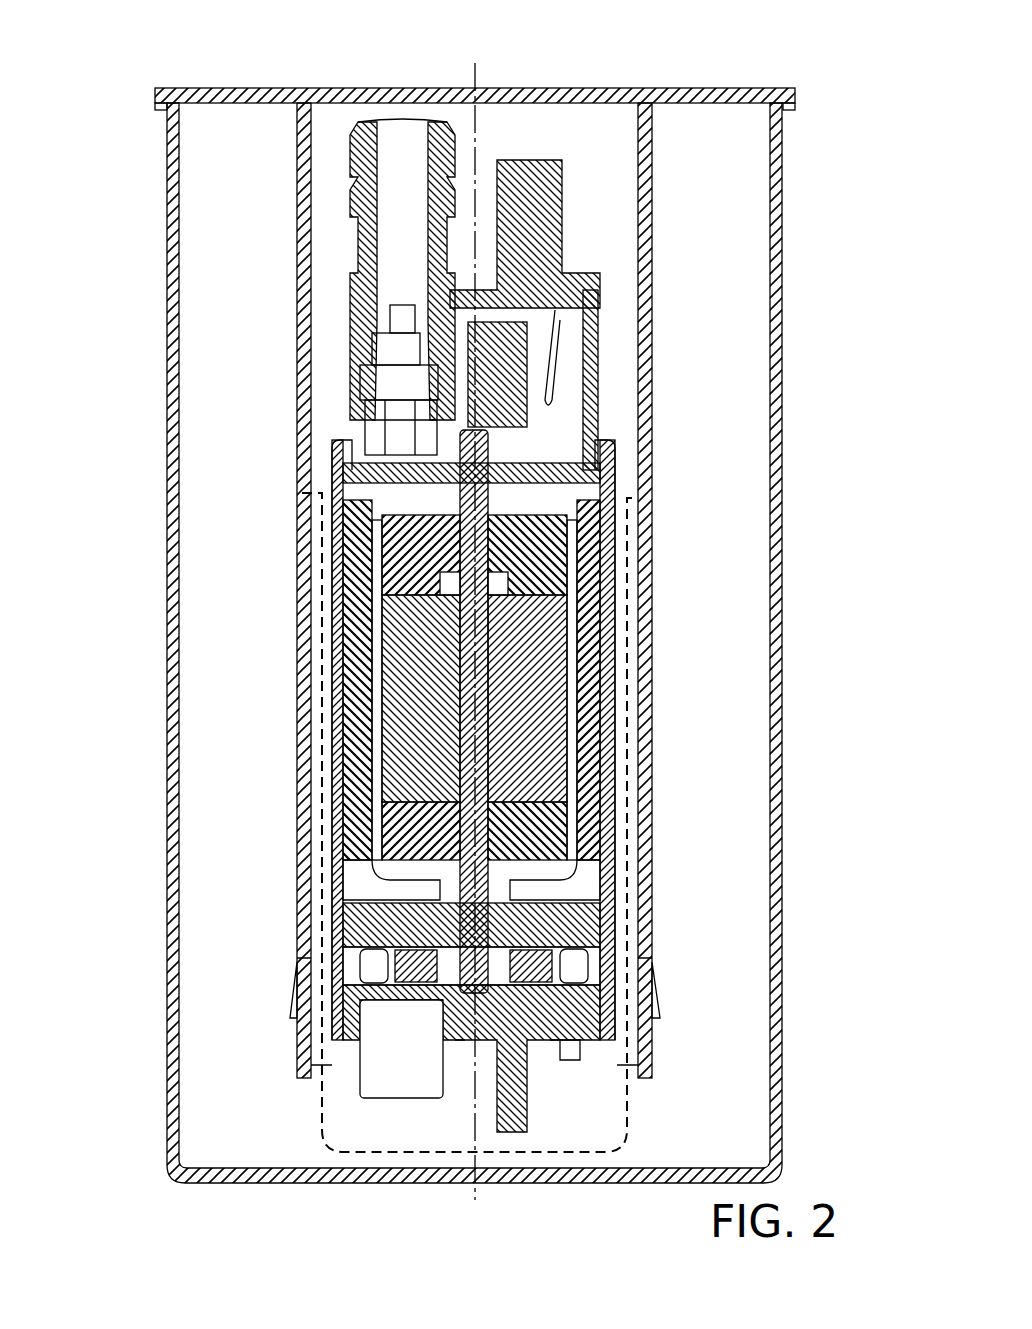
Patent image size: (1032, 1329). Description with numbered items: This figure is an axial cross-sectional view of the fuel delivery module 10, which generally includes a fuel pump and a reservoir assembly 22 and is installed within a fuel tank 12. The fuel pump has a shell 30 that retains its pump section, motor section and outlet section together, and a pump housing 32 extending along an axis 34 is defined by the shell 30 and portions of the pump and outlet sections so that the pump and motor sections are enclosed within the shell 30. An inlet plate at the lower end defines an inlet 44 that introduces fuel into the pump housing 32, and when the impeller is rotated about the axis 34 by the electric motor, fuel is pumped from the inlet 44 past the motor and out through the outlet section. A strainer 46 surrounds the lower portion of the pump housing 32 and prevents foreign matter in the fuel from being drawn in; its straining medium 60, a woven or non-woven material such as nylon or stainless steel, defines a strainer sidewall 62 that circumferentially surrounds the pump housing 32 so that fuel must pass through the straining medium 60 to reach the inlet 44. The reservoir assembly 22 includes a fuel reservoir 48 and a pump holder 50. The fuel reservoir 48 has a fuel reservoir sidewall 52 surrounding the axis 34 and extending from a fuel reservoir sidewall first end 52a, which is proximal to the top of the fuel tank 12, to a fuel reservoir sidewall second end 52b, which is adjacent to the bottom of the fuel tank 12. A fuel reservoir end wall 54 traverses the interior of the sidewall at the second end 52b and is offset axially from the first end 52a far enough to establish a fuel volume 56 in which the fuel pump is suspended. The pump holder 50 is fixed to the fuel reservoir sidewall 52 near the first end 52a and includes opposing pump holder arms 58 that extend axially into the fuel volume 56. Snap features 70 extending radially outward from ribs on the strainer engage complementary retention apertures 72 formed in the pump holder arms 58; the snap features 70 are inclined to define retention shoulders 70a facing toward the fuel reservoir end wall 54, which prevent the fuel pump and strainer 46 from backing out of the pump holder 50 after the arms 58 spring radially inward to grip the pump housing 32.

The fuel delivery module 10 is at (232, 42).
The fuel tank 12 is at (99, 1125).
The reservoir assembly 22 is at (454, 634).
The shell 30 is at (615, 525).
The pump housing 32 is at (590, 307).
The axis 34 is at (475, 72).
The inlet 44 is at (395, 1073).
The strainer 46 is at (628, 1107).
The fuel reservoir 48 is at (422, 655).
The pump holder 50 is at (678, 88).
The fuel reservoir sidewall 52 is at (167, 488).
The fuel reservoir sidewall first end 52a is at (168, 108).
The fuel reservoir sidewall second end 52b is at (177, 1173).
The fuel reservoir end wall 54 is at (280, 1175).
The fuel volume 56 is at (208, 620).
The pump holder arms 58 is at (472, 590).
The straining medium 60 is at (625, 1133).
The strainer sidewall 62 is at (628, 738).
The snap features 70 is at (300, 1008).
The retention shoulders 70a is at (293, 1028).
The retention apertures 72 is at (300, 972).